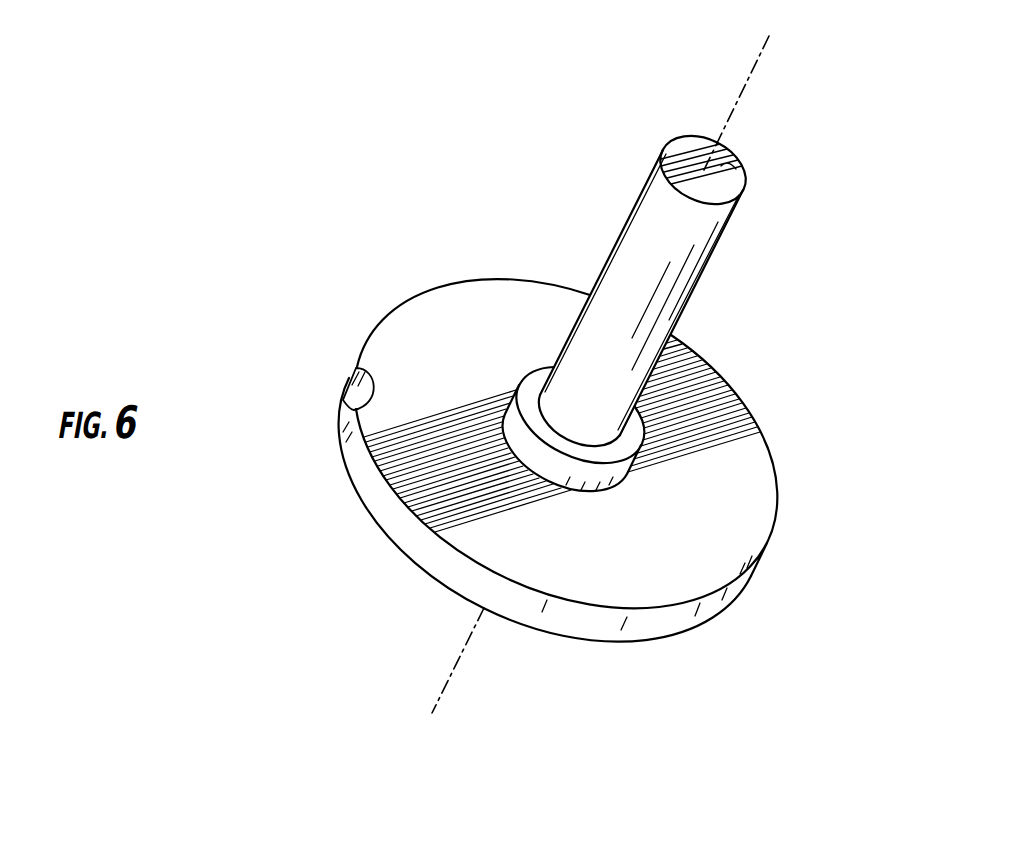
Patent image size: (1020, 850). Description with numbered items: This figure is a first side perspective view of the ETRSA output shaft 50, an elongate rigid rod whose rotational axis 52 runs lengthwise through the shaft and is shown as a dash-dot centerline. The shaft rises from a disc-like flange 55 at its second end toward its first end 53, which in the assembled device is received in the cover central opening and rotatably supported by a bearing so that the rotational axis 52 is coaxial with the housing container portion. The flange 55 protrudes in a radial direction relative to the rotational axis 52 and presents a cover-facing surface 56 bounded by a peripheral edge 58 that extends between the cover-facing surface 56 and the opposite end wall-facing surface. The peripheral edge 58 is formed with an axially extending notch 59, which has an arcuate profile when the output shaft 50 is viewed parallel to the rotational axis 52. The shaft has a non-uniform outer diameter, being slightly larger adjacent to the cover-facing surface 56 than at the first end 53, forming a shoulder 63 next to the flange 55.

The output shaft 50 is at (469, 168).
The rotational axis 52 is at (733, 98).
The first end 53 is at (728, 167).
The flange 55 is at (410, 464).
The cover-facing surface 56 is at (697, 563).
The peripheral edge 58 is at (630, 618).
The notch 59 is at (346, 388).
The collar 63 is at (537, 382).